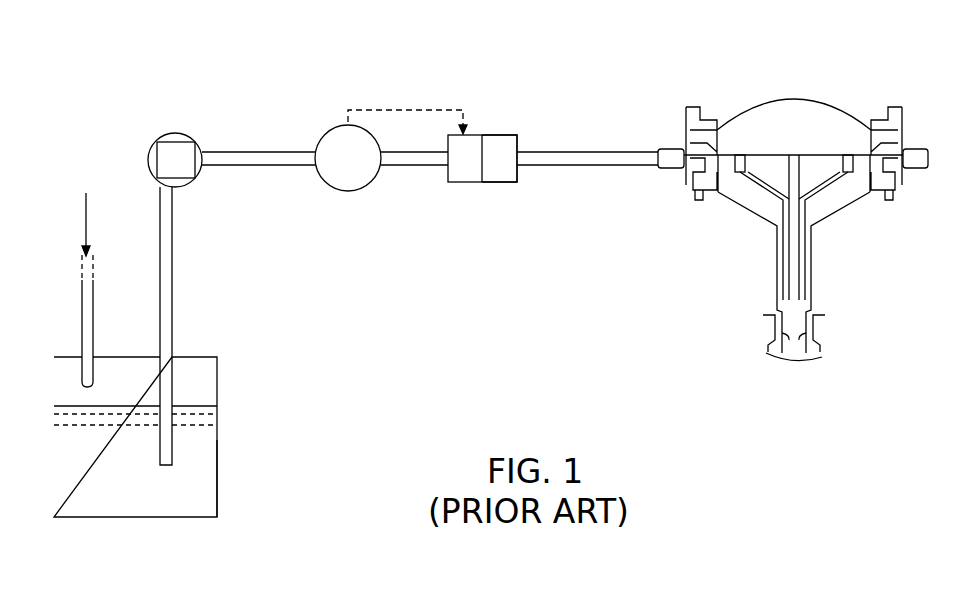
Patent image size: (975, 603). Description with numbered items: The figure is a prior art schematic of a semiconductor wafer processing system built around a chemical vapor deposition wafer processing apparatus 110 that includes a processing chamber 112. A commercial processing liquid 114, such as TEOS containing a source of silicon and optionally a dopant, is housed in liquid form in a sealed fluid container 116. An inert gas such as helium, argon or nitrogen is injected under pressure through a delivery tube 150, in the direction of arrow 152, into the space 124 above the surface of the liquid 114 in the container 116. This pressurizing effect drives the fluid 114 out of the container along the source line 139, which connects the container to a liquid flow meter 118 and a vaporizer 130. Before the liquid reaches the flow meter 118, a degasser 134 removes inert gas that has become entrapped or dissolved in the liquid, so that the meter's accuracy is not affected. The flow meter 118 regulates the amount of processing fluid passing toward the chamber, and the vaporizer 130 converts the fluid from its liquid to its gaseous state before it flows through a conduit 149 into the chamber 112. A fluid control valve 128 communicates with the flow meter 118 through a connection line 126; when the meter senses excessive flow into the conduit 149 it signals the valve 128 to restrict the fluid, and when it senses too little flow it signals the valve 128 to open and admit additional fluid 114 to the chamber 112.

The chemical vapor deposition wafer processing apparatus 110 is at (793, 230).
The processing chamber 112 is at (815, 144).
The processing liquid 114 is at (155, 500).
The sealed fluid container 116 is at (218, 462).
The liquid flow meter 118 is at (348, 191).
The space 124 is at (150, 387).
The connection line 126 is at (408, 110).
The fluid control valve 128 is at (458, 183).
The vaporizer 130 is at (505, 183).
The degasser 134 is at (152, 150).
The source line 139 is at (173, 255).
The conduit 149 is at (280, 152).
The delivery tube 150 is at (80, 337).
The direction arrow 152 is at (85, 203).